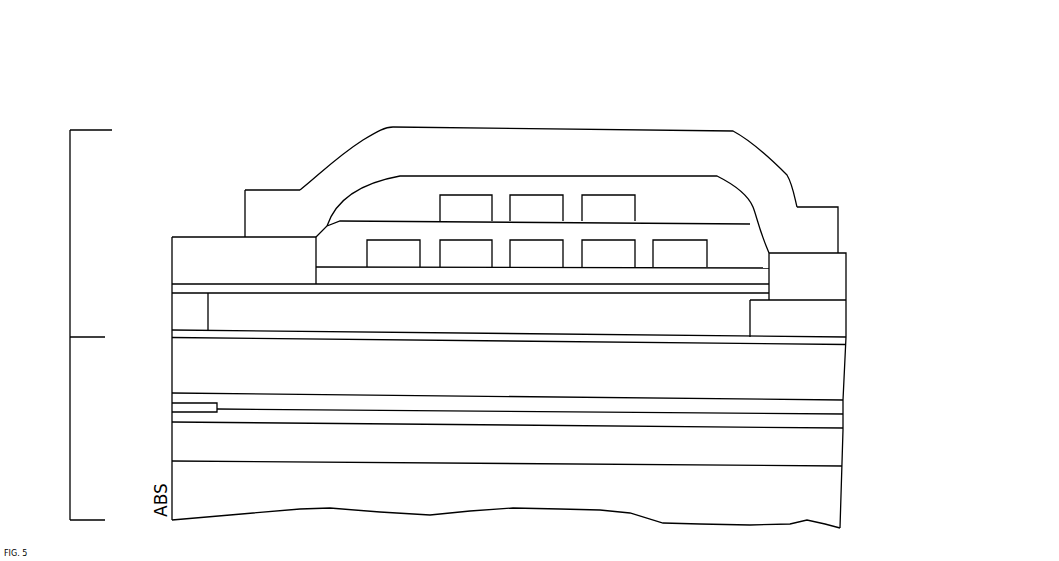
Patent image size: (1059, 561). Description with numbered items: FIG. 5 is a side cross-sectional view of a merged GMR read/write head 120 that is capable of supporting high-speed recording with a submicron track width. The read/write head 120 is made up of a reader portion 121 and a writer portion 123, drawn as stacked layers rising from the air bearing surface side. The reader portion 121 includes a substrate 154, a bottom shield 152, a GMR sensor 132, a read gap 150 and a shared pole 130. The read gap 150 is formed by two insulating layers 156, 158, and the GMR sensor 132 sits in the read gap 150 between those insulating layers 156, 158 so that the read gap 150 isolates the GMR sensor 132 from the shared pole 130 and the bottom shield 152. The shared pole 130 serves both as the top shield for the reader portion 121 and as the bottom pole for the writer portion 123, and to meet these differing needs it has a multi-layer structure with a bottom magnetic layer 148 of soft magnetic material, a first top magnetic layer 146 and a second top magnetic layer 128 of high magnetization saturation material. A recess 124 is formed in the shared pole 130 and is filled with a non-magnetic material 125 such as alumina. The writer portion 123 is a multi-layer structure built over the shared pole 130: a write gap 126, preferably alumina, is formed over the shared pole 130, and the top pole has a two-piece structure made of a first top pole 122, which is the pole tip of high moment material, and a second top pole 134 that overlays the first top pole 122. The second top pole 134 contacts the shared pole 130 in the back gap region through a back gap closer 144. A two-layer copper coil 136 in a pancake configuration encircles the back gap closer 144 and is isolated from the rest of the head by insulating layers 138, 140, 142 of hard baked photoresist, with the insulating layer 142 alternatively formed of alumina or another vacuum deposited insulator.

The read/write head 120 is at (262, 86).
The reader portion 121 is at (70, 420).
The first top pole 122 is at (243, 253).
The writer portion 123 is at (70, 215).
The recess 124 is at (268, 308).
The non-magnetic material 125 is at (508, 323).
The write gap 126 is at (218, 288).
The second top magnetic layer 128 is at (198, 312).
The shared pole 130 is at (165, 292).
The GMR sensor 132 is at (185, 408).
The second top pole 134 is at (388, 148).
The coil 136 is at (535, 260).
The insulating layer 138 is at (683, 203).
The insulating layer 140 is at (737, 242).
The insulating layer 142 is at (727, 280).
The back gap closer 144 is at (828, 281).
The first top magnetic layer 146 is at (837, 342).
The bottom magnetic layer 148 is at (830, 382).
The read gap 150 is at (846, 428).
The bottom shield 152 is at (830, 457).
The substrate 154 is at (845, 486).
The insulating layer 156 is at (417, 400).
The insulating layer 158 is at (545, 418).